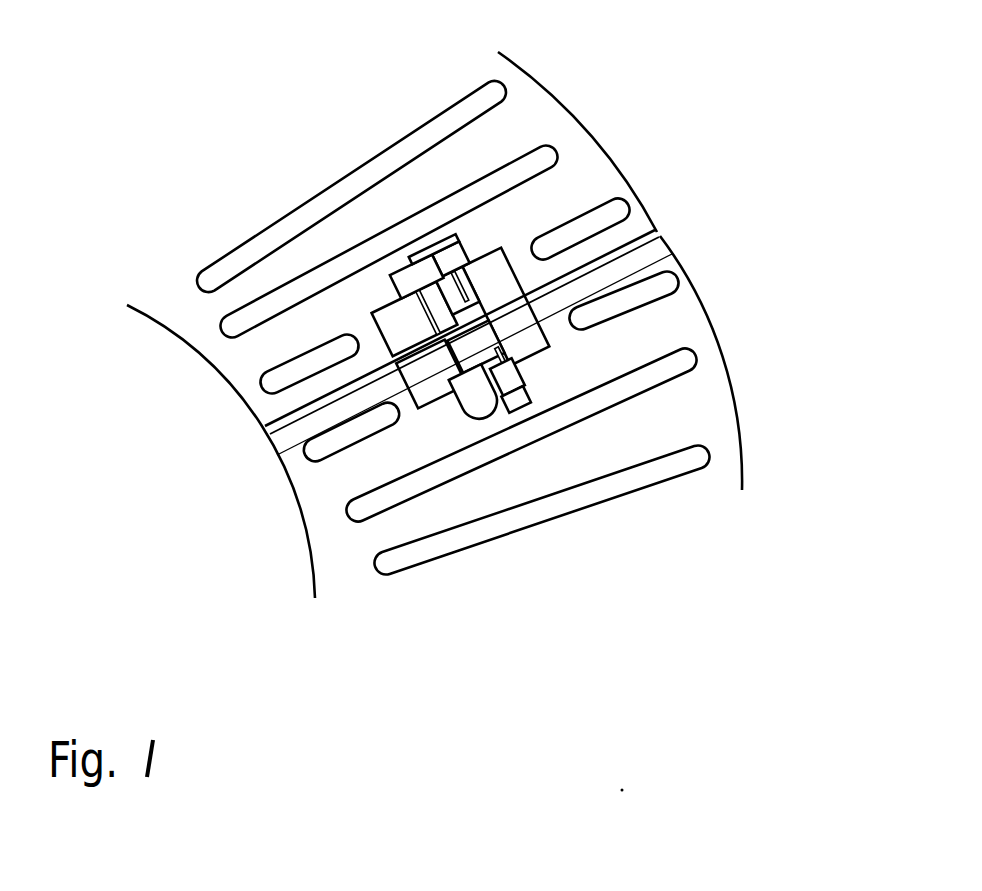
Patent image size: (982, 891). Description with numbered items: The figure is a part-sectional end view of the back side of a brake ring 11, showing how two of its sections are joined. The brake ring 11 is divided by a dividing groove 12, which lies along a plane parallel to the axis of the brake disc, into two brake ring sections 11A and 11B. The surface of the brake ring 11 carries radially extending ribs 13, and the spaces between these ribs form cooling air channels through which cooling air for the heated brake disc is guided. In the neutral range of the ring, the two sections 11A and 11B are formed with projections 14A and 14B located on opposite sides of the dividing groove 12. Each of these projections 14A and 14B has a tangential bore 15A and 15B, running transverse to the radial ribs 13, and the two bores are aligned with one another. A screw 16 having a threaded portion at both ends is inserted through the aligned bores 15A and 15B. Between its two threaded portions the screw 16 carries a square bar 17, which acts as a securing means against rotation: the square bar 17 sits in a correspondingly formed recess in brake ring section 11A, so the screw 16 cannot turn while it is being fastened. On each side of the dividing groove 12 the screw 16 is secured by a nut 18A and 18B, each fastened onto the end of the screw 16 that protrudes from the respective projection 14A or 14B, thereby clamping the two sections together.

The brake ring 11 is at (277, 452).
The brake ring section 11A is at (680, 257).
The brake ring section 11B is at (516, 66).
The dividing groove 12 is at (653, 232).
The radially extending ribs 13 is at (607, 302).
The projection 14A is at (443, 400).
The projection 14B is at (405, 335).
The tangential bore 15A is at (507, 405).
The tangential bore 15B is at (472, 273).
The screw 16 is at (467, 420).
The square bar 17 is at (413, 398).
The nut 18A is at (507, 378).
The nut 18B is at (405, 272).